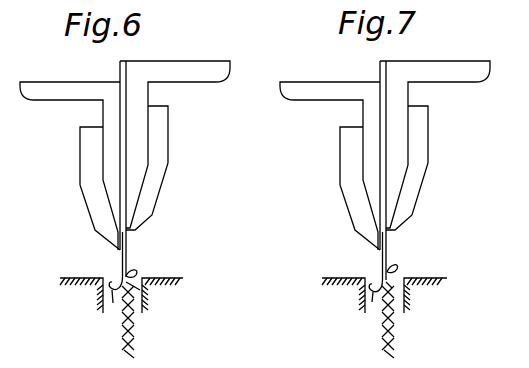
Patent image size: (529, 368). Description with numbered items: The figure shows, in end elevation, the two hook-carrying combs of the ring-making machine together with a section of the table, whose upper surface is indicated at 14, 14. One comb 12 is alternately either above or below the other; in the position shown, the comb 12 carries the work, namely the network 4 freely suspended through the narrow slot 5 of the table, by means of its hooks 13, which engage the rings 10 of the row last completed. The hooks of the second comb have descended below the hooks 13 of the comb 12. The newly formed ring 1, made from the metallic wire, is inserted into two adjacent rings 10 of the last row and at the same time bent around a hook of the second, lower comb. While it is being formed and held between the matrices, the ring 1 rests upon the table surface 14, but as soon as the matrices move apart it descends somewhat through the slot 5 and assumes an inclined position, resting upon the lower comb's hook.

In FIG. 6, the ring 1 is at (132, 278).
In FIG. 7, the ring 1 is at (382, 270).
In FIG. 6, the network 4 is at (137, 347).
In FIG. 7, the network 4 is at (393, 348).
In FIG. 6, the slot 5 is at (113, 303).
In FIG. 7, the slot 5 is at (372, 302).
In FIG. 6, the rings of the row last completed 10 is at (132, 282).
In FIG. 7, the rings of the row last completed 10 is at (393, 275).
In FIG. 6, the comb 12 is at (187, 70).
In FIG. 7, the comb 12 is at (466, 75).
In FIG. 6, the hooks 13 is at (128, 250).
In FIG. 7, the hooks 13 is at (388, 250).
In FIG. 6, the upper surface of the table 14 is at (90, 288).
In FIG. 7, the upper surface of the table 14 is at (384, 295).